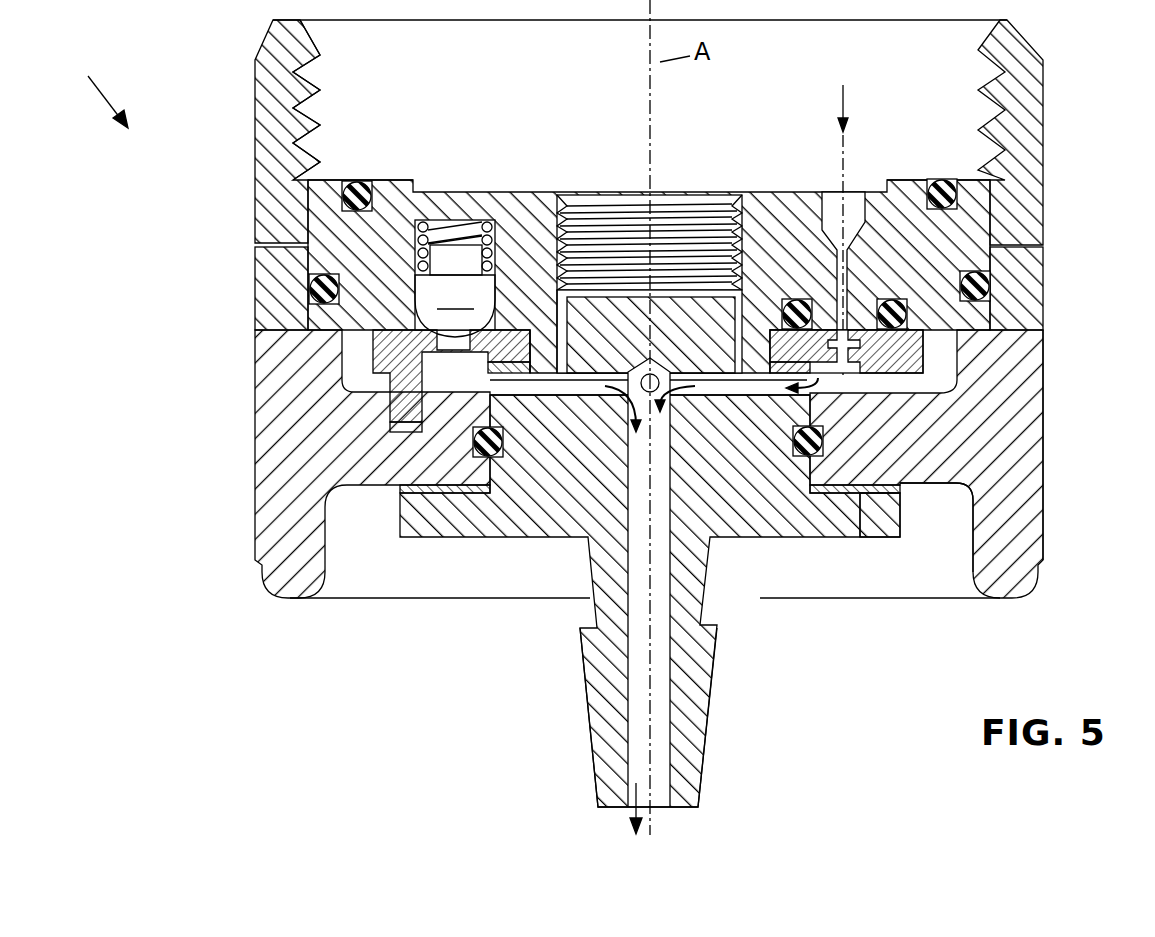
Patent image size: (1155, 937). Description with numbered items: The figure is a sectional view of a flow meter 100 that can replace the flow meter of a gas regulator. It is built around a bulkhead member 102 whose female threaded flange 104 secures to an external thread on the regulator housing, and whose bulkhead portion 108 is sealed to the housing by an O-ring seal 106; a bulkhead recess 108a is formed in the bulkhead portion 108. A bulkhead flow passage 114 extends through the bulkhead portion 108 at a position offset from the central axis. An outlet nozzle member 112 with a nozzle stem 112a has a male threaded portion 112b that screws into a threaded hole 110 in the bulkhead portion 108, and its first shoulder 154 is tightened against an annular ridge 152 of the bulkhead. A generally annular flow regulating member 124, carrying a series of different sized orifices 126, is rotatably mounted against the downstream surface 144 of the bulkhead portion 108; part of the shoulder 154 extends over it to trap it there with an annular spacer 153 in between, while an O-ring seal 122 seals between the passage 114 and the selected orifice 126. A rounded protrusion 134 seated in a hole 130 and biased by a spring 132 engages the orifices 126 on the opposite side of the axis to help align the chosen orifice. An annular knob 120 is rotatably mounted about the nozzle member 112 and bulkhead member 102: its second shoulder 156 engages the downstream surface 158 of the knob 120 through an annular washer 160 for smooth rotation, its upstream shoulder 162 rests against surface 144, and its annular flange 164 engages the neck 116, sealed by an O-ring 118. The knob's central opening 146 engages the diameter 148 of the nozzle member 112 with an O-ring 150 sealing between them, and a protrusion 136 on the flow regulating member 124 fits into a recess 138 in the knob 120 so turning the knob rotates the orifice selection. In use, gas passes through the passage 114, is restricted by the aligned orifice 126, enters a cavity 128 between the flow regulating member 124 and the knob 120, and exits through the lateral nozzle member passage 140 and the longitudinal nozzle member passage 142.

The flow meter 100 is at (86, 93).
The bulkhead member 102 is at (254, 116).
The female threaded flange 104 is at (312, 67).
The O-ring seal 106 is at (358, 182).
The bulkhead portion 108 is at (327, 180).
The bulkhead recess 108a is at (748, 180).
The threaded hole 110 is at (580, 203).
The outlet nozzle member 112 is at (752, 520).
The nozzle stem 112a is at (710, 713).
The male threaded portion 112b is at (680, 223).
The bulkhead flow passage 114 is at (852, 200).
The neck 116 is at (985, 248).
The O-ring 118 is at (992, 276).
The annular knob 120 is at (1045, 540).
The O-ring seal 122 is at (908, 313).
The flow regulating member 124 is at (912, 351).
The orifices 126 is at (850, 368).
The cavity 128 is at (945, 380).
The hole 130 is at (545, 345).
The spring 132 is at (432, 224).
The rounded protrusion 134 is at (455, 291).
The protrusion 136 is at (388, 383).
The recess 138 is at (390, 428).
The lateral nozzle member passage 140 is at (713, 387).
The longitudinal nozzle member passage 142 is at (627, 757).
The downstream surface 144 is at (340, 353).
The central opening 146 is at (490, 410).
The diameter 148 is at (400, 480).
The O-ring 150 is at (473, 440).
The annular ridge 152 is at (550, 250).
The annular spacer 153 is at (780, 302).
The first shoulder 154 is at (522, 380).
The second shoulder 156 is at (860, 497).
The downstream surface 158 is at (928, 487).
The annular washer 160 is at (832, 490).
The shoulder 162 is at (312, 300).
The annular flange 164 is at (262, 250).